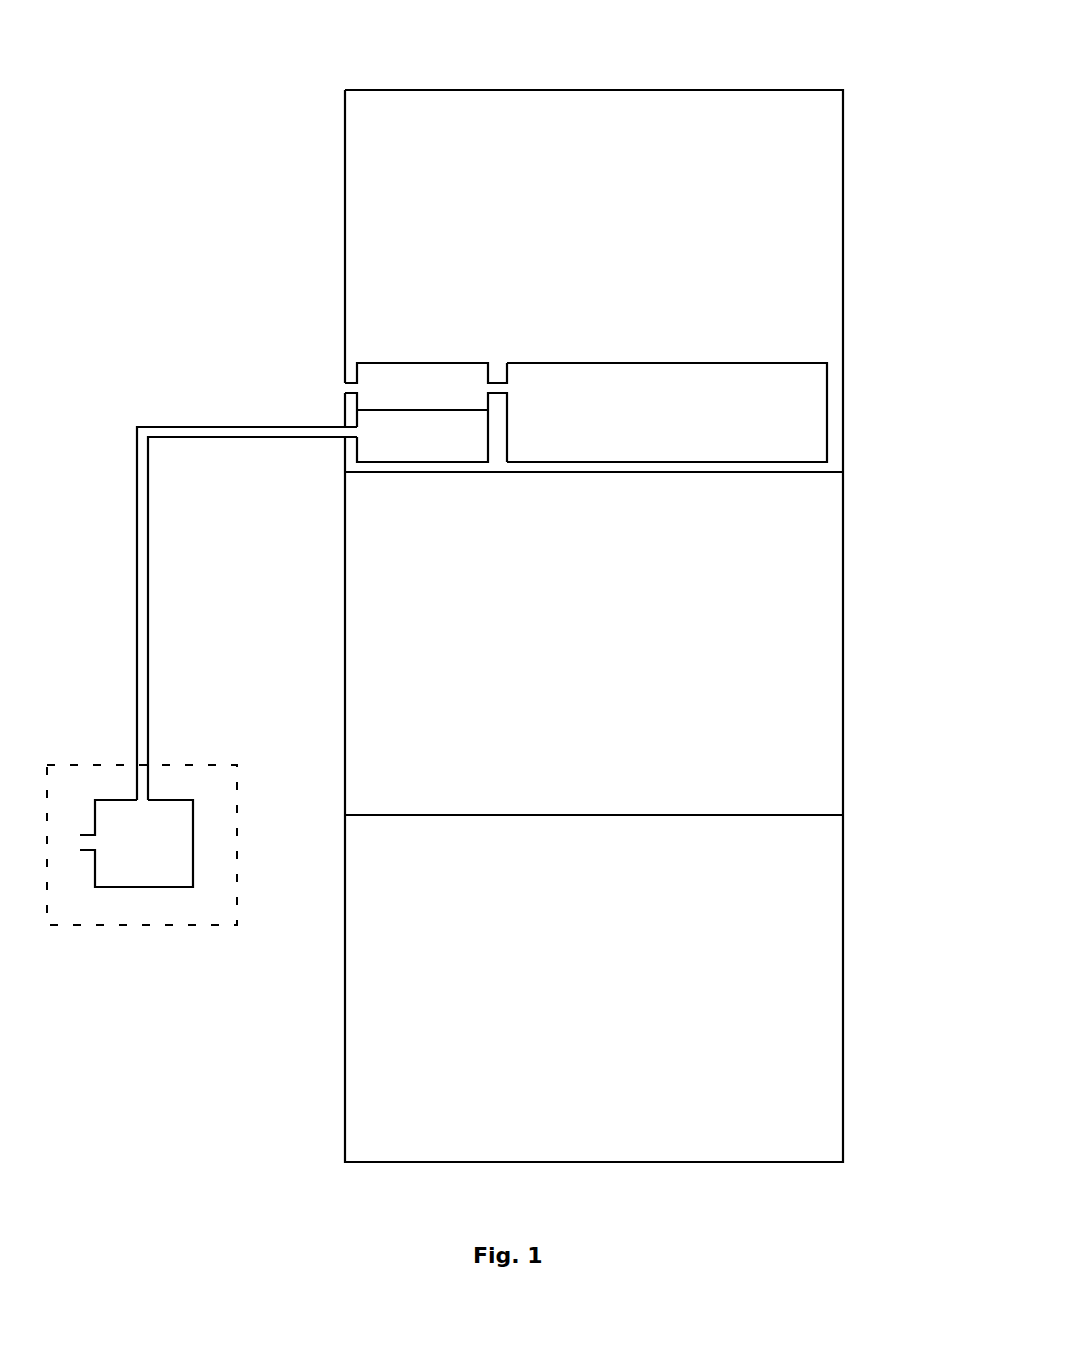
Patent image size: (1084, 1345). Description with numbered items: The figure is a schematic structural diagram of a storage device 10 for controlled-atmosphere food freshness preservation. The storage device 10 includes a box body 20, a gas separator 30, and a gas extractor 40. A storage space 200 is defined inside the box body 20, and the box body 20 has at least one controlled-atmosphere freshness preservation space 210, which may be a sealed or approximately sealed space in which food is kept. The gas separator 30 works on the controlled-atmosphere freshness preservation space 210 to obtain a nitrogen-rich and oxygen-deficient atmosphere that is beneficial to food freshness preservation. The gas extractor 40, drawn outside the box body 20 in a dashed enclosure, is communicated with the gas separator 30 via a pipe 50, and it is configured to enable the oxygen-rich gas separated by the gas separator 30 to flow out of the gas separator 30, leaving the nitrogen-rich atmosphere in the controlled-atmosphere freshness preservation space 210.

The storage device 10 is at (185, 46).
The box body 20 is at (806, 89).
The storage space 200 is at (803, 222).
The controlled-atmosphere freshness preservation space 210 is at (796, 393).
The gas separator 30 is at (408, 412).
The gas extractor 40 is at (122, 812).
The pipe 50 is at (138, 432).